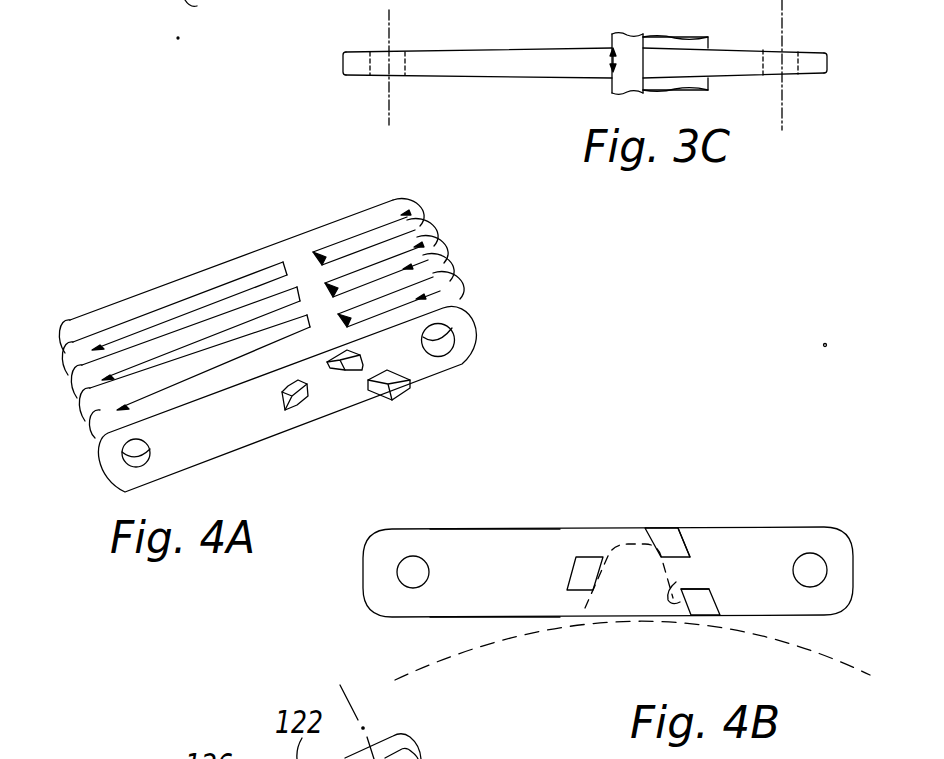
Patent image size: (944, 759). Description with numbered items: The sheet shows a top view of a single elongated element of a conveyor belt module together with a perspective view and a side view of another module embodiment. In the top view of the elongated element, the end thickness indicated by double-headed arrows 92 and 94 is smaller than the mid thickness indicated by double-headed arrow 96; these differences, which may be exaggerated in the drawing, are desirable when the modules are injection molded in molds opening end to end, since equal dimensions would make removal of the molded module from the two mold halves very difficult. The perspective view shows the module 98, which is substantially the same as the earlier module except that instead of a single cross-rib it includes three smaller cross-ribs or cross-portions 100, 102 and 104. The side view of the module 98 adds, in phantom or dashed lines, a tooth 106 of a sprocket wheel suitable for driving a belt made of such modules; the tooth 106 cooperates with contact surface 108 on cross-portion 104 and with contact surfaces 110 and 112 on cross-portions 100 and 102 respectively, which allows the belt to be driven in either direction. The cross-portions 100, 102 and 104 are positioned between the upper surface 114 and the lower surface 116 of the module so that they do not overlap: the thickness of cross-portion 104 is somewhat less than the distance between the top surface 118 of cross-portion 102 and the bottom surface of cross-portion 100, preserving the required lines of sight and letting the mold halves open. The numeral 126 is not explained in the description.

In FIG. 3C, the end thickness 92 is at (343, 52).
In FIG. 3C, the end thickness 94 is at (842, 20).
In FIG. 3C, the mid thickness 96 is at (603, 62).
In FIG. 4A, the module 98 is at (230, 256).
In FIG. 4A, the cross-portion 100 is at (345, 372).
In FIG. 4A, the cross-portion 102 is at (407, 397).
In FIG. 4B, the cross-portion 102 is at (707, 620).
In FIG. 4A, the cross-portion 104 is at (302, 408).
In FIG. 4B, the cross-portion 104 is at (573, 567).
In FIG. 4B, the tooth 106 is at (668, 534).
In FIG. 4B, the contact surface 108 is at (612, 565).
In FIG. 4B, the contact surface 110 is at (642, 527).
In FIG. 4B, the contact surface 112 is at (676, 582).
In FIG. 4B, the upper surface 114 is at (490, 527).
In FIG. 4B, the lower surface 116 is at (463, 622).
In FIG. 4B, the top surface 118 is at (706, 585).
In FIG. 4B, the lug 126 is at (675, 582).